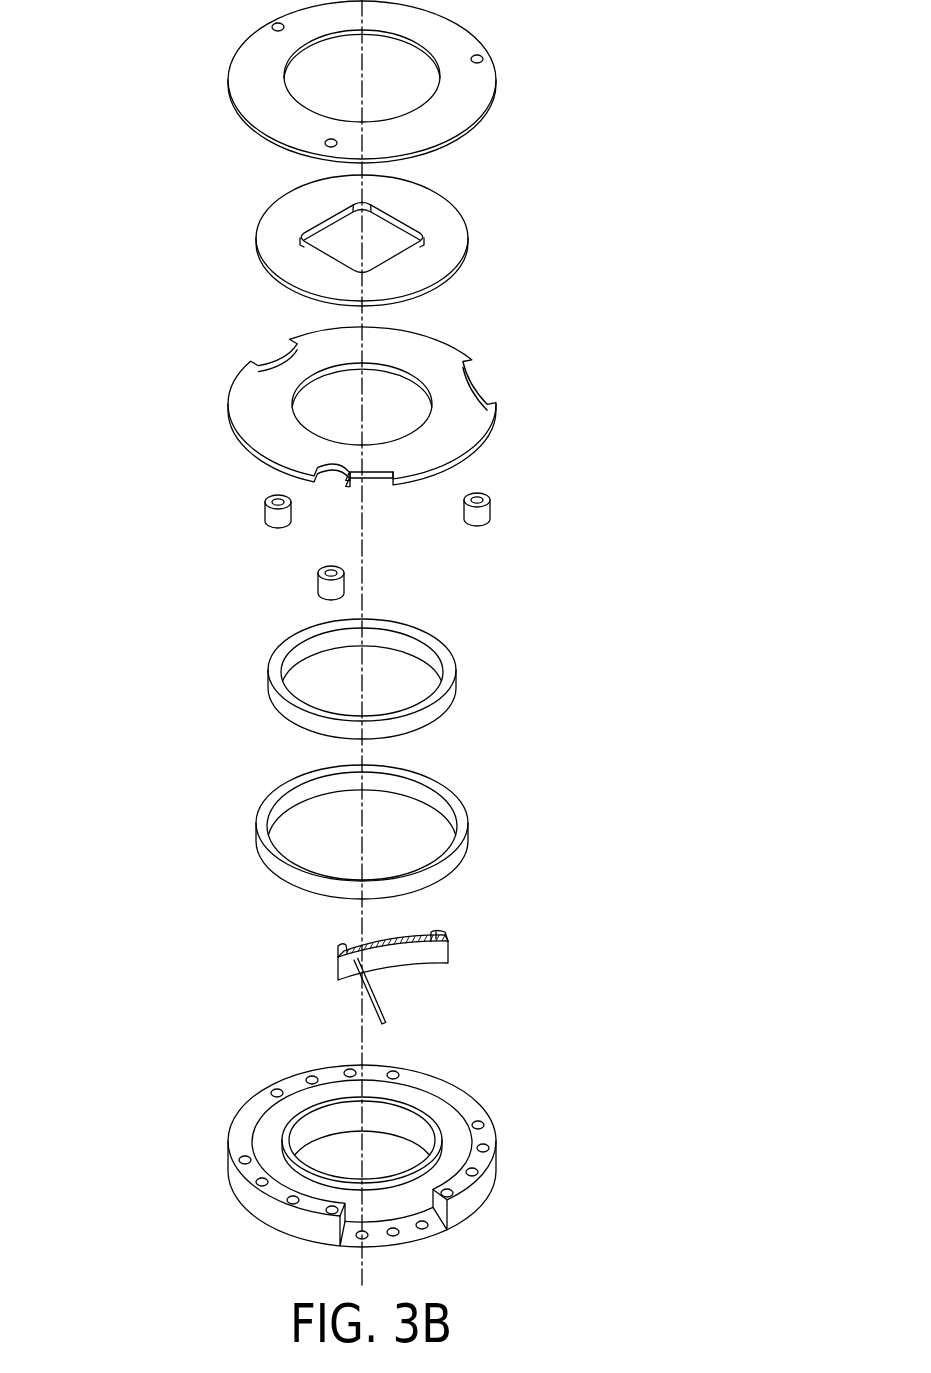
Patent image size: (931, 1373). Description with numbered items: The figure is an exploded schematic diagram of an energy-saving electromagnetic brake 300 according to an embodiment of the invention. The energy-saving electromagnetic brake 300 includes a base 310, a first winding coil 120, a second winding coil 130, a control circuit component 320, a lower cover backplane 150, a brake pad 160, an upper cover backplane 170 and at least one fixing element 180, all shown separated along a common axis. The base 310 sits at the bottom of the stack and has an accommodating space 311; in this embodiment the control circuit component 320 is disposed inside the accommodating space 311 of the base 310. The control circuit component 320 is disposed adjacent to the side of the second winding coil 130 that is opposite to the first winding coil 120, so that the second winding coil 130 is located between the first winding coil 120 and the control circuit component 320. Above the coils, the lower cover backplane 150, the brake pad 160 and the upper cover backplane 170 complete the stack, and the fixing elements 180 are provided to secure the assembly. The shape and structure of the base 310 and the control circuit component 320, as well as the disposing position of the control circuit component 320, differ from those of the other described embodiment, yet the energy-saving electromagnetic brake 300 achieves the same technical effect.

The energy-saving electromagnetic brake 300 is at (89, 33).
The upper cover backplane 170 is at (482, 83).
The brake pad 160 is at (450, 242).
The lower cover backplane 150 is at (475, 420).
The fixing element 180 is at (265, 508).
The first winding coil 120 is at (452, 668).
The second winding coil 130 is at (463, 822).
The control circuit component 320 is at (443, 955).
The accommodating space 311 is at (446, 1128).
The base 310 is at (402, 1148).